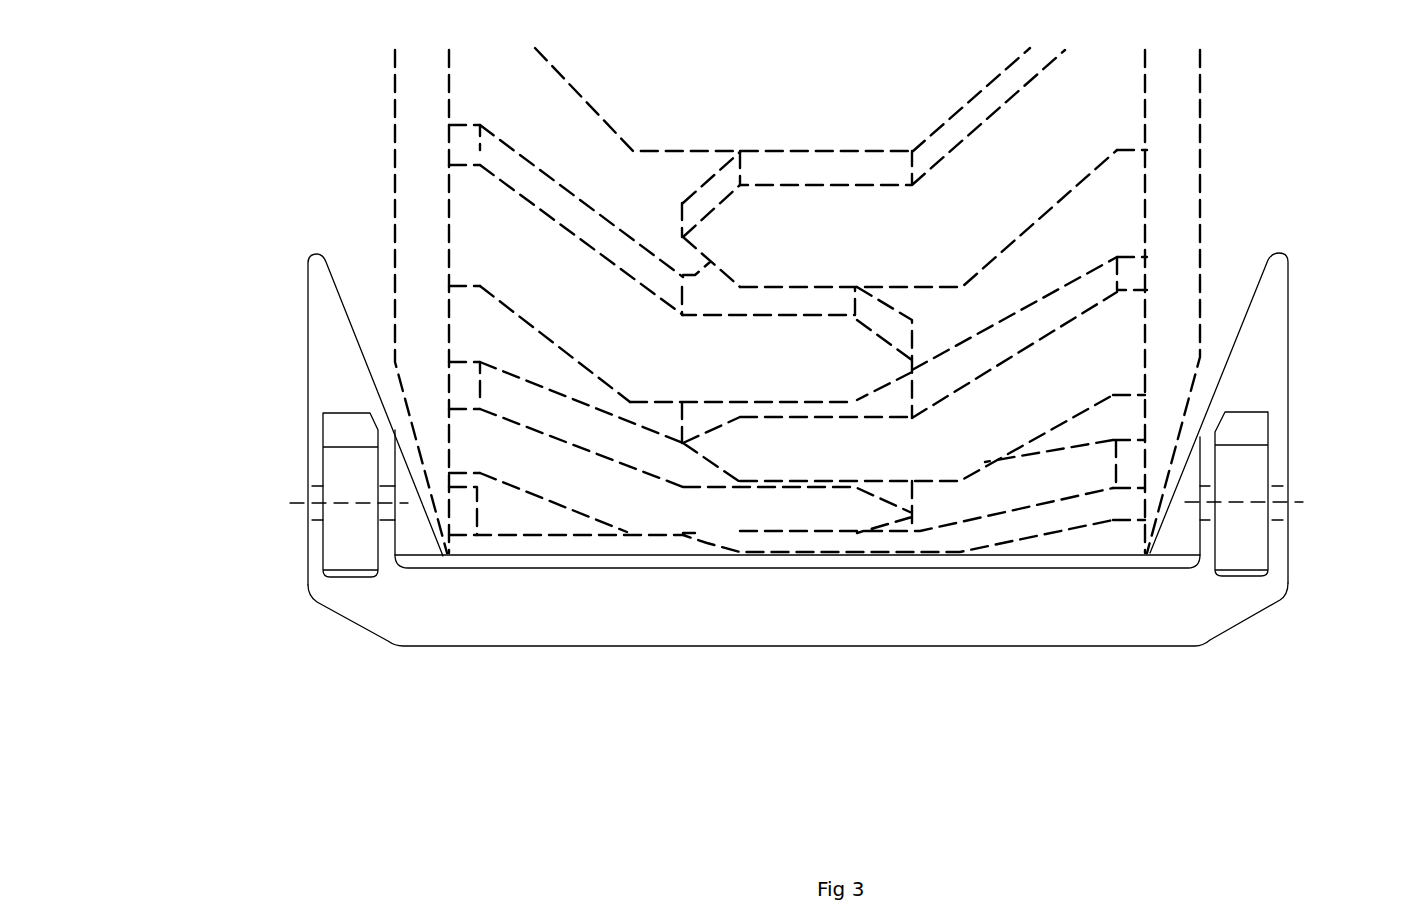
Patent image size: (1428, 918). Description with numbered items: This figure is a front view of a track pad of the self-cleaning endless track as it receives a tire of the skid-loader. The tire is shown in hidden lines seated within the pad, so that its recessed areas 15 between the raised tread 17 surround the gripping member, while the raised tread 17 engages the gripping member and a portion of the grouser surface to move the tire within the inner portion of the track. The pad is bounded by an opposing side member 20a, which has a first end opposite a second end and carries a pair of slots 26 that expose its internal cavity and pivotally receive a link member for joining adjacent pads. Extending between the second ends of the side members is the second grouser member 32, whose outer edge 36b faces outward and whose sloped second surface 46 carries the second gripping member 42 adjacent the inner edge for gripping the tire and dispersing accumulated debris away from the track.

The recessed areas 15 is at (497, 107).
The raised tread 17 is at (510, 238).
The side member 20a is at (337, 366).
The slots 26 is at (320, 537).
The second grouser member 32 is at (520, 650).
The outer edge 36b is at (1008, 618).
The second gripping member 42 is at (636, 556).
The second surface 46 is at (785, 567).